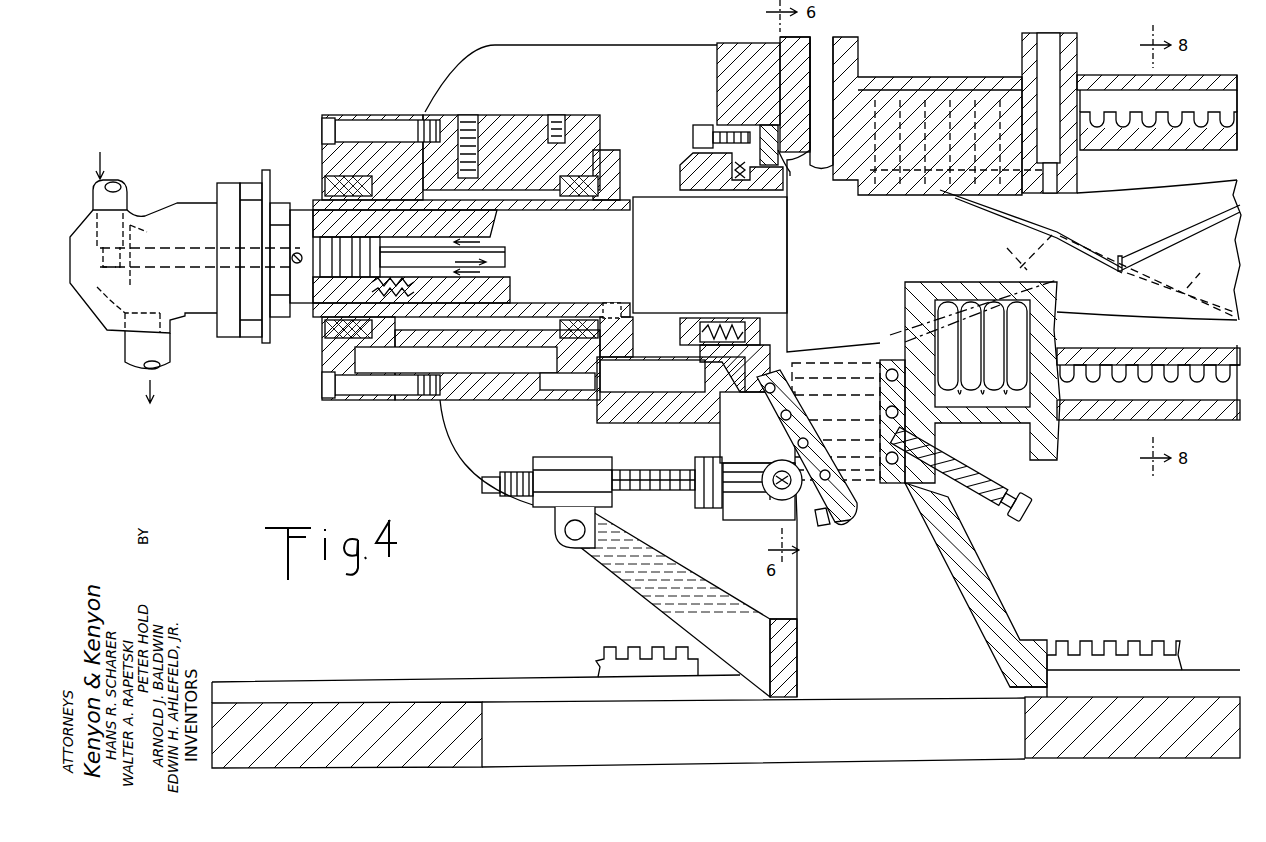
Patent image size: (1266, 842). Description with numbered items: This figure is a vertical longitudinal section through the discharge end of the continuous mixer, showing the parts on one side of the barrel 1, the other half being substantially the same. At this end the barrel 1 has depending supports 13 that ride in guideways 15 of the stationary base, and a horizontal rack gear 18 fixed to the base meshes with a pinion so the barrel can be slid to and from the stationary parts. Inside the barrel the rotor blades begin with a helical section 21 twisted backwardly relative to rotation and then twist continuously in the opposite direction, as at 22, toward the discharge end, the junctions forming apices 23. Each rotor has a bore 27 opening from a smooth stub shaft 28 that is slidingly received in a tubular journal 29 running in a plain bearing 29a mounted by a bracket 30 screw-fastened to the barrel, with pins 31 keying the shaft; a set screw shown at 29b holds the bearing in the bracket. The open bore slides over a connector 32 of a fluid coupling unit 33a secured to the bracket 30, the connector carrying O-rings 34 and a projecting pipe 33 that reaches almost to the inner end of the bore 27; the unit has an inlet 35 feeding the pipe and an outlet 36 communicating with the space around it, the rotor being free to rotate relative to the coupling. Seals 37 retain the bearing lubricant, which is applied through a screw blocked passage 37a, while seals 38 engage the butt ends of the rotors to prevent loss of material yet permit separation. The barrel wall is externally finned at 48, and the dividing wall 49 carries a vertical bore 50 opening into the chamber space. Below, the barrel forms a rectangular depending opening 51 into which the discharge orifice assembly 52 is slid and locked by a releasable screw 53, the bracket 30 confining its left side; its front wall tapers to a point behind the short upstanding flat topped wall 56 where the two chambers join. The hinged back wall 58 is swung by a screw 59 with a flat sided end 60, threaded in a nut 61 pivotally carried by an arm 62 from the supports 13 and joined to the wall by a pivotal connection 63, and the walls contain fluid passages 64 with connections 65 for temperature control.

The barrel 1 is at (1115, 433).
The depending supports 13 is at (1012, 615).
The guideways 15 is at (1220, 670).
The rack gear 18 is at (1078, 645).
The twist or helical section 21 is at (1188, 238).
The oppositely twisting portion 22 is at (1010, 215).
The apices 23 is at (1124, 256).
The bore 27 is at (353, 225).
The stub shaft 28 is at (500, 307).
The tubular journal 29 is at (506, 203).
The plain bearing 29a is at (540, 188).
The bearing block 29b is at (487, 116).
The bracket 30 is at (554, 55).
The pins 31 is at (612, 308).
The connectors 32 is at (323, 317).
The projecting pipe 33 is at (505, 266).
The fluid inlet and outlet coupling 33a is at (188, 202).
The O-rings 34 is at (320, 277).
The inlet 35 is at (118, 178).
The outlet 36 is at (150, 355).
The seals 37 is at (325, 182).
The screw blocked passage 37a is at (590, 124).
The seals 38 is at (758, 175).
The fins 48 is at (1190, 118).
The dividing wall 49 is at (1083, 97).
The vertical bore 50 is at (1040, 50).
The rectangular depending opening 51 is at (886, 333).
The discharge orifice assembly 52 is at (871, 490).
The releasable screw 53 is at (1020, 476).
The short upstanding flat topped wall 56 is at (921, 286).
The back wall 58 is at (838, 518).
The screw 59 is at (651, 478).
The flat sided end 60 is at (490, 486).
The nut 61 is at (570, 463).
The arm 62 is at (630, 580).
The pivotal connection 63 is at (782, 471).
The fluid passages 64 is at (820, 442).
The connections 65 is at (818, 522).